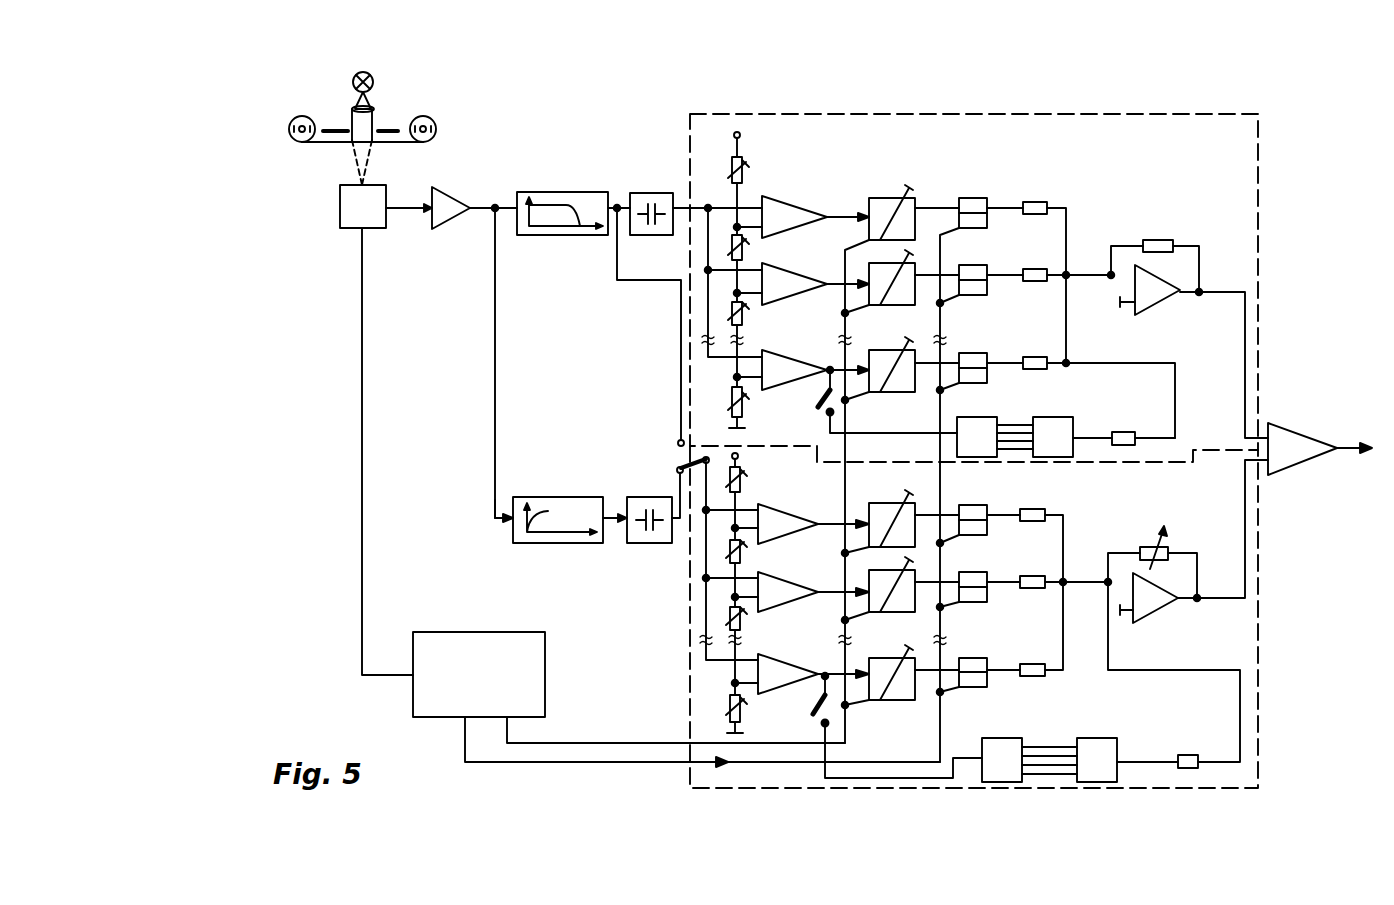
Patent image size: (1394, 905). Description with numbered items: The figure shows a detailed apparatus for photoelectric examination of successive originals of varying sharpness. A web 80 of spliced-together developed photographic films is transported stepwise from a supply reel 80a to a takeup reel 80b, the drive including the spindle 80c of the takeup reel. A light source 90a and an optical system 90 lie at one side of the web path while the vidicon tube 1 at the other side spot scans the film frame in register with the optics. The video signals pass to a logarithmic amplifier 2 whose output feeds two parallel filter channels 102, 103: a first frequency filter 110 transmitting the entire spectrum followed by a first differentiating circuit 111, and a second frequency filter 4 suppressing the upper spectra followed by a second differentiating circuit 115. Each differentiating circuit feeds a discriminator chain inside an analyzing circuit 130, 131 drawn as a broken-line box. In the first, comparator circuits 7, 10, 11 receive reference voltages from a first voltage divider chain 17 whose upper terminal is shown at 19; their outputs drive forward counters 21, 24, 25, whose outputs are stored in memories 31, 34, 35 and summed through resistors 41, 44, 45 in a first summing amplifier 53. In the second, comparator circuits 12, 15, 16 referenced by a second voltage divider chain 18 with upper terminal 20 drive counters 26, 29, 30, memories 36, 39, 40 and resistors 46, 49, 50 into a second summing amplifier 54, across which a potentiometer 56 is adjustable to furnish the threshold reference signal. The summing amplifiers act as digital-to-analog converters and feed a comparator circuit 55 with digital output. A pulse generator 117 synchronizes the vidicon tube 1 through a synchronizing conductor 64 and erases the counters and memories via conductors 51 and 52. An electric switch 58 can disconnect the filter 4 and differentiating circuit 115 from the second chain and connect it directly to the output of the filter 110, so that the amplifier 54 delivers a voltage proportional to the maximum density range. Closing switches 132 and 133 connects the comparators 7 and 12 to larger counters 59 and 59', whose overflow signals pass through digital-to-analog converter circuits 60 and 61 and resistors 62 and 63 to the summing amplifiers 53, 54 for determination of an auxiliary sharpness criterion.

The vidicon tube 1 is at (340, 222).
The logarithmic amplifier 2 is at (457, 200).
The filter channel 102 is at (513, 190).
The first frequency filter 110 is at (575, 193).
The first differentiating circuit 111 is at (650, 193).
The synchronizing conductor 64 is at (370, 420).
The pulse generator 117 is at (482, 633).
The erasing signal transmitting conductor 51 is at (606, 744).
The erasing signal transmitting conductor 52 is at (631, 756).
The filter channel 103 is at (490, 530).
The second frequency filter 4 is at (558, 507).
The second differentiating circuit 115 is at (652, 543).
The electric switch 58 is at (700, 445).
The analyzing circuit 130 is at (1258, 162).
The analyzing circuit 131 is at (1258, 557).
The upper terminal 19 is at (741, 137).
The first voltage divider chain 17 is at (734, 384).
The comparator circuit 11 is at (781, 208).
The comparator circuit 10 is at (781, 277).
The comparator circuit 7 is at (784, 363).
The switch 132 is at (814, 399).
The forward counter 25 is at (887, 199).
The forward counter 24 is at (894, 306).
The forward counter 21 is at (893, 392).
The memory 35 is at (977, 198).
The memory 34 is at (983, 266).
The memory 31 is at (979, 355).
The resistor 45 is at (1035, 201).
The resistor 44 is at (1030, 268).
The resistor 41 is at (1027, 355).
The first summing amplifier 53 is at (1168, 285).
The larger counter 59 is at (990, 425).
The digital-to-analog converter circuit 60 is at (1054, 426).
The resistor 62 is at (1122, 432).
The comparator circuit 55 is at (1304, 438).
The upper terminal 20 is at (739, 457).
The second voltage divider chain 18 is at (746, 485).
The comparator circuit 16 is at (779, 514).
The comparator circuit 15 is at (779, 582).
The comparator circuit 12 is at (790, 685).
The switch 133 is at (813, 721).
The forward counter 30 is at (888, 504).
The forward counter 29 is at (875, 613).
The forward counter 26 is at (876, 704).
The memory 40 is at (977, 495).
The memory 39 is at (976, 572).
The memory 36 is at (971, 658).
The resistor 50 is at (1026, 509).
The resistor 49 is at (1028, 574).
The resistor 46 is at (1034, 662).
The potentiometer 56 is at (1160, 587).
The second summing amplifier 54 is at (1145, 619).
The larger counter 59' is at (1015, 743).
The digital-to-analog converter circuit 61 is at (1109, 737).
The resistor 63 is at (1186, 753).
The optical system 90 is at (375, 127).
The light source 90a is at (353, 82).
The web 80 is at (382, 134).
The supply reel 80a is at (305, 117).
The takeup reel 80b is at (425, 117).
The spindle 80c is at (432, 140).